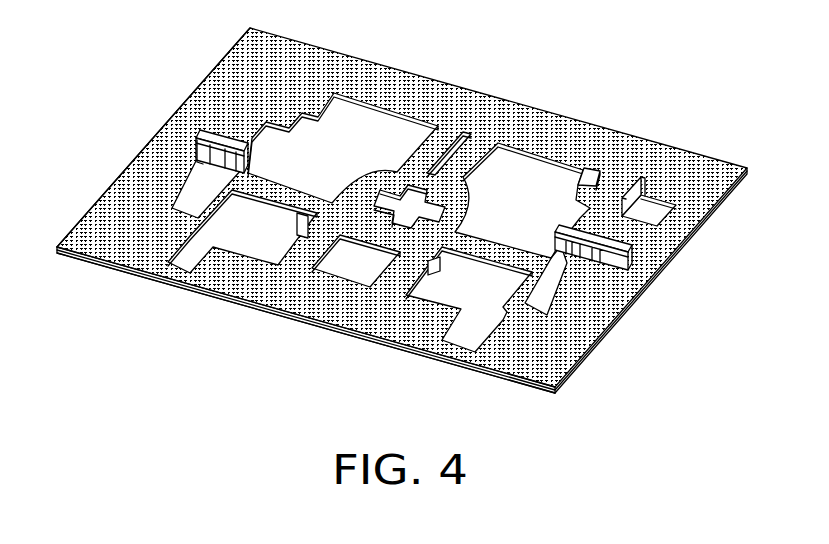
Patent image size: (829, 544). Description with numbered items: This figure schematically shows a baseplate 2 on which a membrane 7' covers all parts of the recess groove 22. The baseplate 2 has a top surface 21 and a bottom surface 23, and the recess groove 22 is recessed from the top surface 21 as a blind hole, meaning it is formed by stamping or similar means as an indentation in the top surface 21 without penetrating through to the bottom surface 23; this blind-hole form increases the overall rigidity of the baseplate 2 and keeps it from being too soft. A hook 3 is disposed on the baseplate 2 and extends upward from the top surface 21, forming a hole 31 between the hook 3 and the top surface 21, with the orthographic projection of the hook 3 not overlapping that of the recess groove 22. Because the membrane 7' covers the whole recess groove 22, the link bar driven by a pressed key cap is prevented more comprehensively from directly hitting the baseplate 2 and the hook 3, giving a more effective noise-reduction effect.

The baseplate 2 is at (194, 288).
The top surface 21 is at (224, 72).
The recess groove 22 is at (550, 298).
The bottom surface 23 is at (118, 270).
The hook 3 is at (625, 253).
The hole 31 is at (580, 278).
The membrane 7' is at (402, 210).